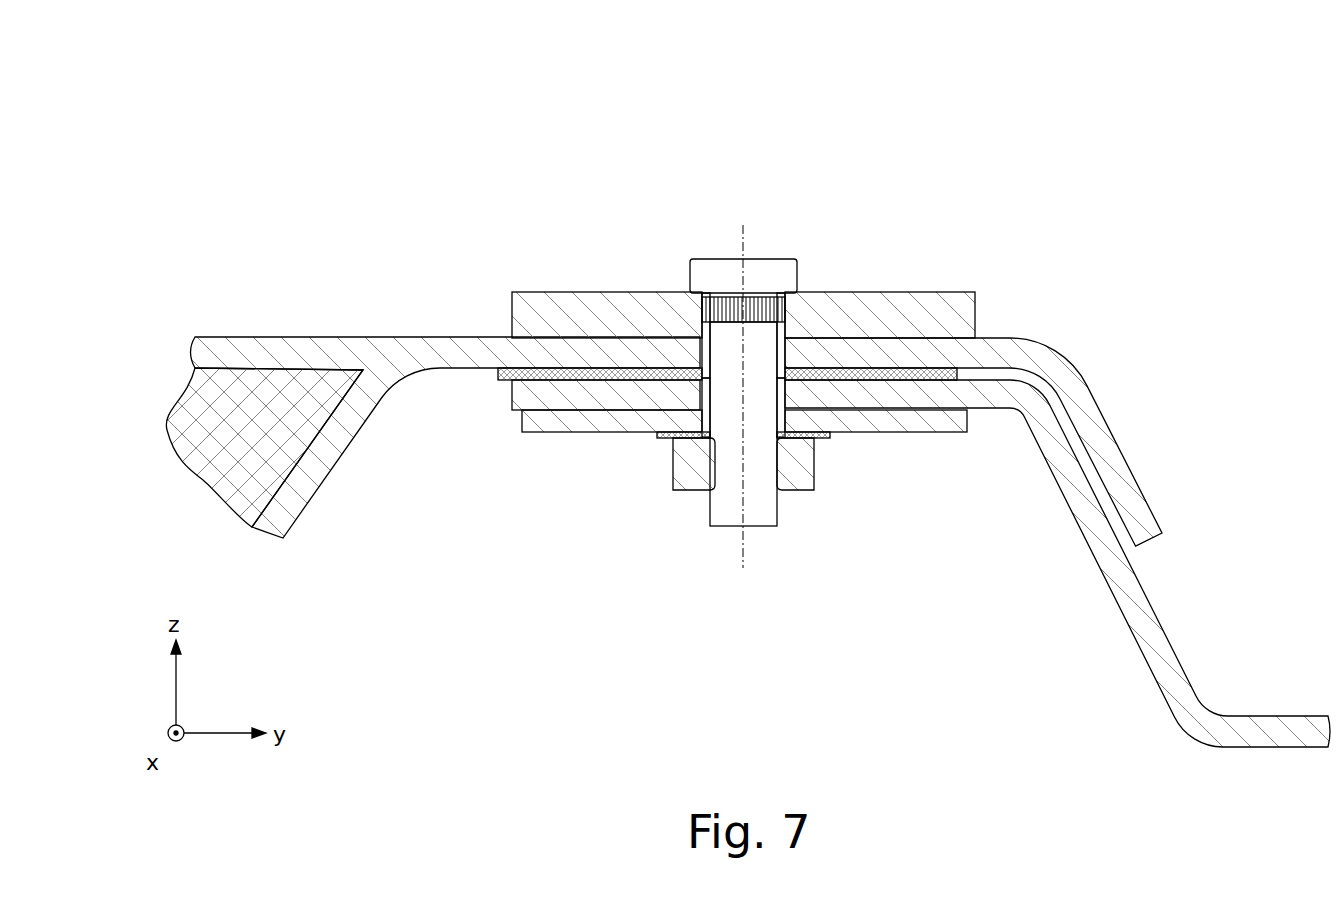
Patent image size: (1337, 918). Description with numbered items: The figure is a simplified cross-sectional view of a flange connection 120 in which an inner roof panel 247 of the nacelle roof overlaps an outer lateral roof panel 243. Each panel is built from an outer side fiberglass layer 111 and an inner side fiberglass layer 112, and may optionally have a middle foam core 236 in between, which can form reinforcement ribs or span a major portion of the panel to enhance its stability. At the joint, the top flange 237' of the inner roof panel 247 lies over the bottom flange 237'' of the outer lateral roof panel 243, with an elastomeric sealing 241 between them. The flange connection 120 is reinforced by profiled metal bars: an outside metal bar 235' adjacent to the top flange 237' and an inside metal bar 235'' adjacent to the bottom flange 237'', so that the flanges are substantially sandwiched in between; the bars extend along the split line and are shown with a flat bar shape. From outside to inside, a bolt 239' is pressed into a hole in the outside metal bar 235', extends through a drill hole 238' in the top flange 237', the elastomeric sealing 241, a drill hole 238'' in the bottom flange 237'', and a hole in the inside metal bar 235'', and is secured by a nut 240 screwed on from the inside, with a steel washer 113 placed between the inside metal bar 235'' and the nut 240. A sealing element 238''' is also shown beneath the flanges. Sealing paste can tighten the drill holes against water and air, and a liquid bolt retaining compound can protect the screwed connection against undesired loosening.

The flange connection 120 is at (762, 153).
The bolt 239' is at (731, 346).
The top flange 237' is at (973, 372).
The outside metal bar 235' is at (754, 268).
The inner roof panel 247 is at (421, 322).
The outer side fiberglass layer 111 is at (262, 345).
The drill hole 238' is at (652, 308).
The foam core 236 is at (180, 413).
The elastomeric sealing 241 is at (498, 374).
The inner side fiberglass layer 112 is at (315, 478).
The inside metal bar 235'' is at (730, 475).
The drill hole 238'' is at (681, 459).
The washer 238''' is at (743, 510).
The nut 240 is at (793, 483).
The steel washer 113 is at (820, 438).
The bottom flange 237'' is at (745, 460).
The outer lateral roof panel 243 is at (1188, 613).